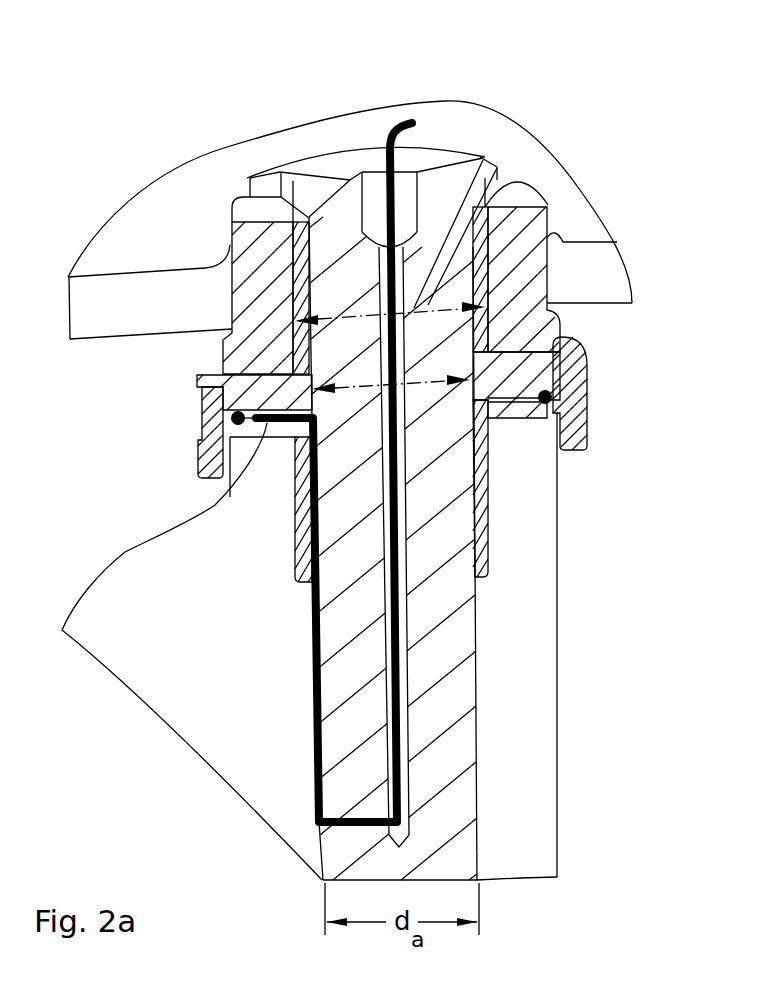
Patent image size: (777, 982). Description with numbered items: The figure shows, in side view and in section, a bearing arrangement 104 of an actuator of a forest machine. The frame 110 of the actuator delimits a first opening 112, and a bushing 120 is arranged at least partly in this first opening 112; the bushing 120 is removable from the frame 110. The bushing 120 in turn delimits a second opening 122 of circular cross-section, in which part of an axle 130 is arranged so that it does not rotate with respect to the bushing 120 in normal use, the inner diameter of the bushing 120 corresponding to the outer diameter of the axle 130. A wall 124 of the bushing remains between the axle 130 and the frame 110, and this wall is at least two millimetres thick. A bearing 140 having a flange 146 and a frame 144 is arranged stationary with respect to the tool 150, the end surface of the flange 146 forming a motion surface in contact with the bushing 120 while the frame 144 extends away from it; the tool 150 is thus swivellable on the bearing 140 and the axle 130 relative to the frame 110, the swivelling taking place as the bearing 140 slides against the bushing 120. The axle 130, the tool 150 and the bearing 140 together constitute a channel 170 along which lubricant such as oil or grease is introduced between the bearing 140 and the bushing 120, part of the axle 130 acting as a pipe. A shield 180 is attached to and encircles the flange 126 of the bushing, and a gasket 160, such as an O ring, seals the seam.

The bearing arrangement 104 is at (300, 100).
The frame of an actuator of a forest machine 110 is at (550, 241).
The first opening 112 is at (487, 158).
The bushing 120 is at (568, 340).
The second opening 122 is at (427, 380).
The wall of the bushing 124 is at (231, 252).
The flange of the bushing 126 is at (197, 388).
The axle 130 is at (445, 533).
The bearing 140 is at (527, 415).
The frame of the bearing 144 is at (297, 518).
The flange of the bearing 146 is at (228, 498).
The tool of the actuator 150 is at (205, 677).
The gasket 160 is at (551, 397).
The channel for supplying lubricant 170 is at (400, 118).
The shield 180 is at (586, 433).